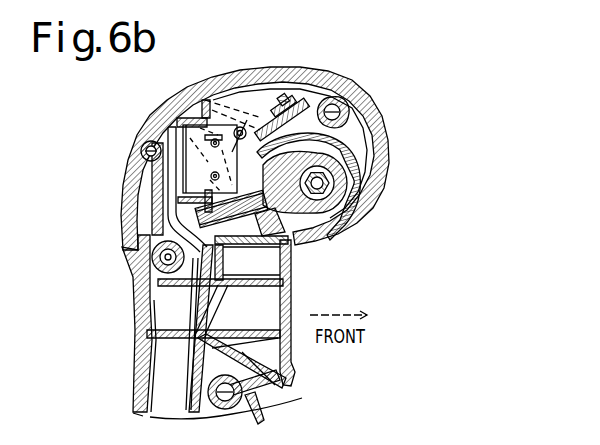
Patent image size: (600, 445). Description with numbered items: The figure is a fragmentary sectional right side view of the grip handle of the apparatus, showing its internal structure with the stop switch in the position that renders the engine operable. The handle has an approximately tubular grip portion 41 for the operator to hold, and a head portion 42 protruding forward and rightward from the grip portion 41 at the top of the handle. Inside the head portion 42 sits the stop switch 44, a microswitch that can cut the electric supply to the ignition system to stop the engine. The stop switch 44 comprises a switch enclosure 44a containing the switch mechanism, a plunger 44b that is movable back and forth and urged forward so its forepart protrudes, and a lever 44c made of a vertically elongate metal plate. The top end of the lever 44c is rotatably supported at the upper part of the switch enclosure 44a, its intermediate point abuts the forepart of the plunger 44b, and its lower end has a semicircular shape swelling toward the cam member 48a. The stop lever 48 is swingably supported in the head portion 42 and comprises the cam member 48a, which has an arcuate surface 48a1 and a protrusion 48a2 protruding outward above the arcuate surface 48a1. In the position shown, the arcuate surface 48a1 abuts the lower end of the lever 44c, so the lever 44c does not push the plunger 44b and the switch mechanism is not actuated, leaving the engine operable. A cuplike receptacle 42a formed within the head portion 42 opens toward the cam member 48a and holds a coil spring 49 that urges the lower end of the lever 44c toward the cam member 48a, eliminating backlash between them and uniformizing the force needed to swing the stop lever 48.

The grip portion 41 is at (263, 412).
The head portion 42 is at (392, 151).
The cuplike receptacle 42a is at (200, 213).
The stop switch 44 is at (203, 133).
The switch enclosure 44a is at (195, 130).
The plunger 44b is at (248, 140).
The lever 44c is at (318, 92).
The stop lever 48 is at (247, 117).
The cam member 48a is at (293, 210).
The arcuate surface 48a1 is at (282, 212).
The protrusion 48a2 is at (355, 172).
The coil spring 49 is at (293, 242).